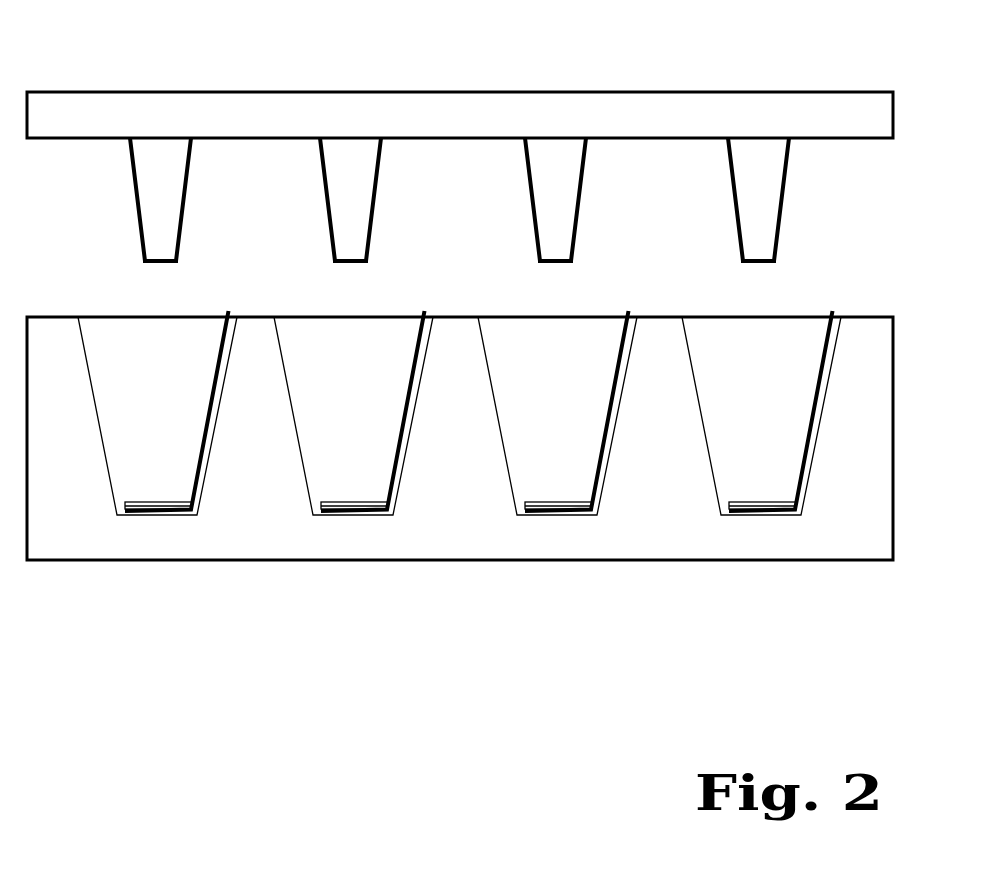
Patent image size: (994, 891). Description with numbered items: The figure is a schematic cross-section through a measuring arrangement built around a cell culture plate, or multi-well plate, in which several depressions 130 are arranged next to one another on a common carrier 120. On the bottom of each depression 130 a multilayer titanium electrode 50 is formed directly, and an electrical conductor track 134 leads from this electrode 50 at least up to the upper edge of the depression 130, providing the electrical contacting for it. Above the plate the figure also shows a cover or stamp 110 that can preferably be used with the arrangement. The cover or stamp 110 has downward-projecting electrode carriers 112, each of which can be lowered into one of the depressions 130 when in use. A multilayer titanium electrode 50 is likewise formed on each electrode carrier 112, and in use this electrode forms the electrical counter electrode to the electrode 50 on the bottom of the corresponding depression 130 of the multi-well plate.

The cover or stamp 110 is at (258, 103).
The electrode carriers 112 is at (152, 153).
The multilayer titanium electrode 50 is at (182, 218).
The common carrier 120 is at (848, 540).
The depressions (wells) 130 is at (118, 473).
The electrical conductor track 134 is at (229, 311).